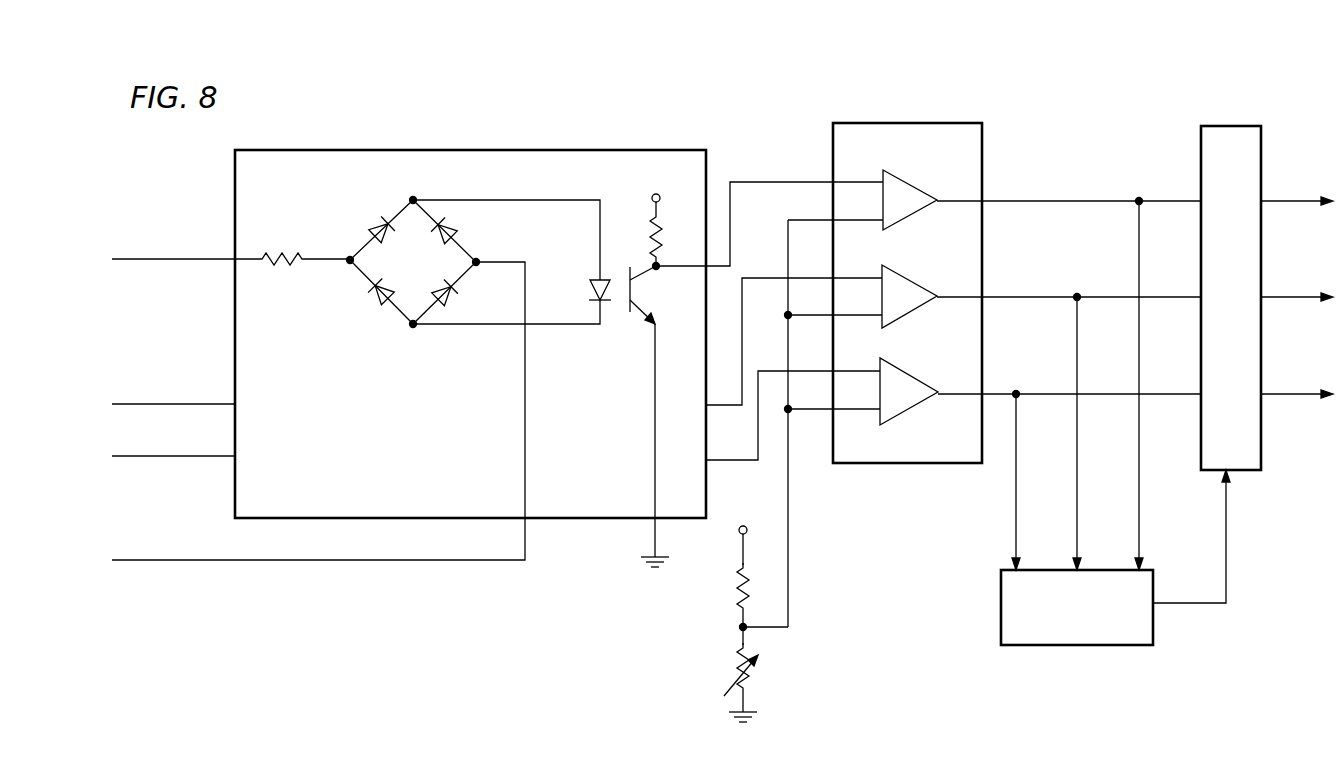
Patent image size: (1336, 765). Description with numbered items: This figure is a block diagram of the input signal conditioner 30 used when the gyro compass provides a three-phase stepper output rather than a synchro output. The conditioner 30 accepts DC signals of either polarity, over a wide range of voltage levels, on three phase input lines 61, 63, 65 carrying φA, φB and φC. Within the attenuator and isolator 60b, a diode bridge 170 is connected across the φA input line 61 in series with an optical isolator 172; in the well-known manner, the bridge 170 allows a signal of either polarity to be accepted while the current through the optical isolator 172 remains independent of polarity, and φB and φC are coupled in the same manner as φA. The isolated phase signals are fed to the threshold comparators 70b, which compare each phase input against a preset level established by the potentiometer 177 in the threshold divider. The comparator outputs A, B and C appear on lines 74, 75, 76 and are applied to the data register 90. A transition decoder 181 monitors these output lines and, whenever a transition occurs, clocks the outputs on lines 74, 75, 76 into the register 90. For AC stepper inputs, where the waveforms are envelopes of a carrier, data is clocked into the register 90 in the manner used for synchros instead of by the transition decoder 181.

The input signal conditioner 30 is at (600, 118).
The attenuator and isolator 60b is at (708, 162).
The line 61 is at (150, 258).
The line 63 is at (148, 404).
The line 65 is at (150, 456).
The diode bridge 170 is at (426, 267).
The optical isolator 172 is at (618, 310).
The potentiometer 177 is at (755, 668).
The comparators 70b is at (907, 123).
The line 74 is at (1018, 201).
The line 75 is at (1016, 297).
The line 76 is at (1026, 394).
The register 90 is at (1216, 126).
The transition decoder 181 is at (1154, 628).